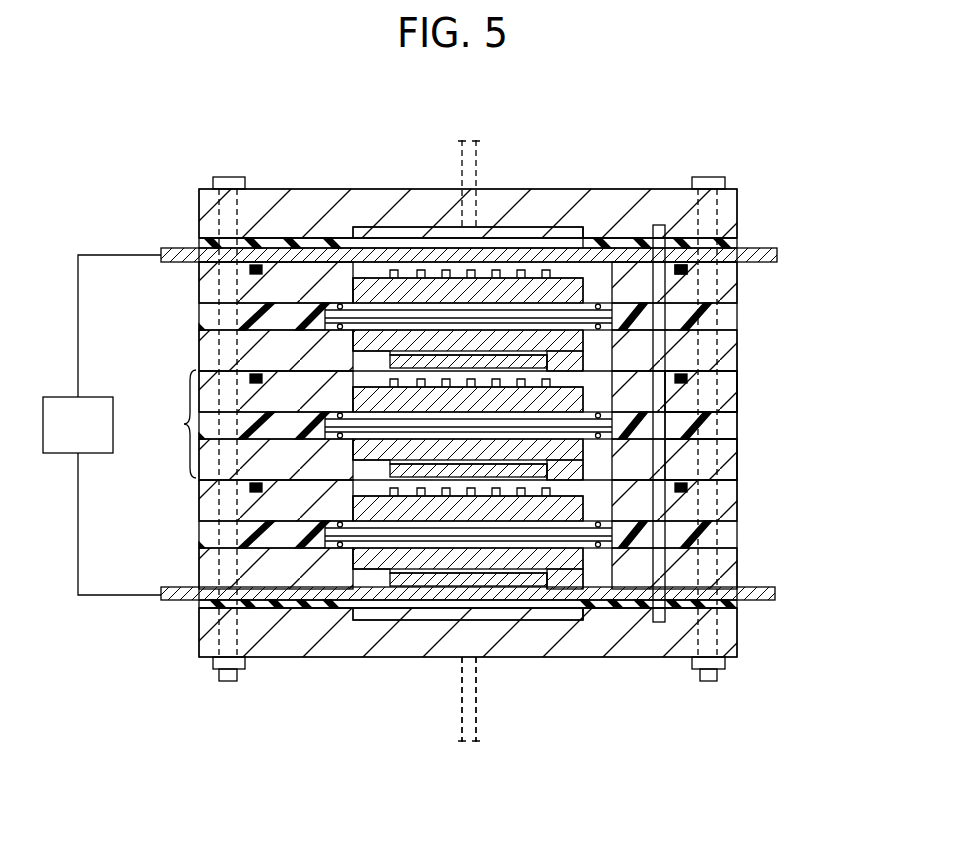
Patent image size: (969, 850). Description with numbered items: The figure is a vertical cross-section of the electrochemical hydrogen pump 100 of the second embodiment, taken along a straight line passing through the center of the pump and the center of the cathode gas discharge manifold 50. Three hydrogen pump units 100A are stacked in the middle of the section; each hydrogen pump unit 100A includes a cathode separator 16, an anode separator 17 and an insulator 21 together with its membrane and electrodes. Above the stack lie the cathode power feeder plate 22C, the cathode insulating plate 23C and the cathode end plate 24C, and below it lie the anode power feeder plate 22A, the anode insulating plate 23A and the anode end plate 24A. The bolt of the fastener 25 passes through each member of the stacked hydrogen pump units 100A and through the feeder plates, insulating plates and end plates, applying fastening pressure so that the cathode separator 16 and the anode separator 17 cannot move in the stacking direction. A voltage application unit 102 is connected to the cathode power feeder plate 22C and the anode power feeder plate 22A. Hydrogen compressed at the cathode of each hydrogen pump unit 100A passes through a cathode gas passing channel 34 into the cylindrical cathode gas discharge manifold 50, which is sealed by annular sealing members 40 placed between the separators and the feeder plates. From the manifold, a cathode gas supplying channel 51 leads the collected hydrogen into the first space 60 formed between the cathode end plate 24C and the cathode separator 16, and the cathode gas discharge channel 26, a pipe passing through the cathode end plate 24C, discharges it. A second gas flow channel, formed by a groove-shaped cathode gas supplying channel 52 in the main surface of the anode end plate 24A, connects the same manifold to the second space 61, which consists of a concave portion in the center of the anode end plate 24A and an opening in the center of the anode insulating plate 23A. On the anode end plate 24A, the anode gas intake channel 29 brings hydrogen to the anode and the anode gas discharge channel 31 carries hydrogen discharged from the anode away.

The electrochemical hydrogen pump 100 is at (397, 91).
The hydrogen pump unit 100A is at (161, 424).
The voltage application unit 102 is at (98, 437).
The cathode separator 16 is at (727, 392).
The anode separator 17 is at (727, 460).
The insulator 21 is at (727, 428).
The anode power feeder plate 22A is at (775, 590).
The cathode power feeder plate 22C is at (778, 257).
The anode insulating plate 23A is at (735, 605).
The cathode insulating plate 23C is at (727, 247).
The anode end plate 24A is at (730, 630).
The cathode end plate 24C is at (727, 203).
The fastener 25 is at (228, 185).
The cathode gas discharge channel 26 is at (462, 168).
The anode gas intake channel 29 is at (470, 705).
The anode gas discharge channel 31 is at (523, 701).
The cathode gas passing channel 34 is at (688, 268).
The annular sealing member 40 is at (715, 358).
The cathode gas discharge manifold 50 is at (662, 528).
The cathode gas supplying channel 51 is at (623, 233).
The cathode gas supplying channel 52 is at (620, 613).
The first space 60 is at (510, 232).
The second space 61 is at (525, 613).